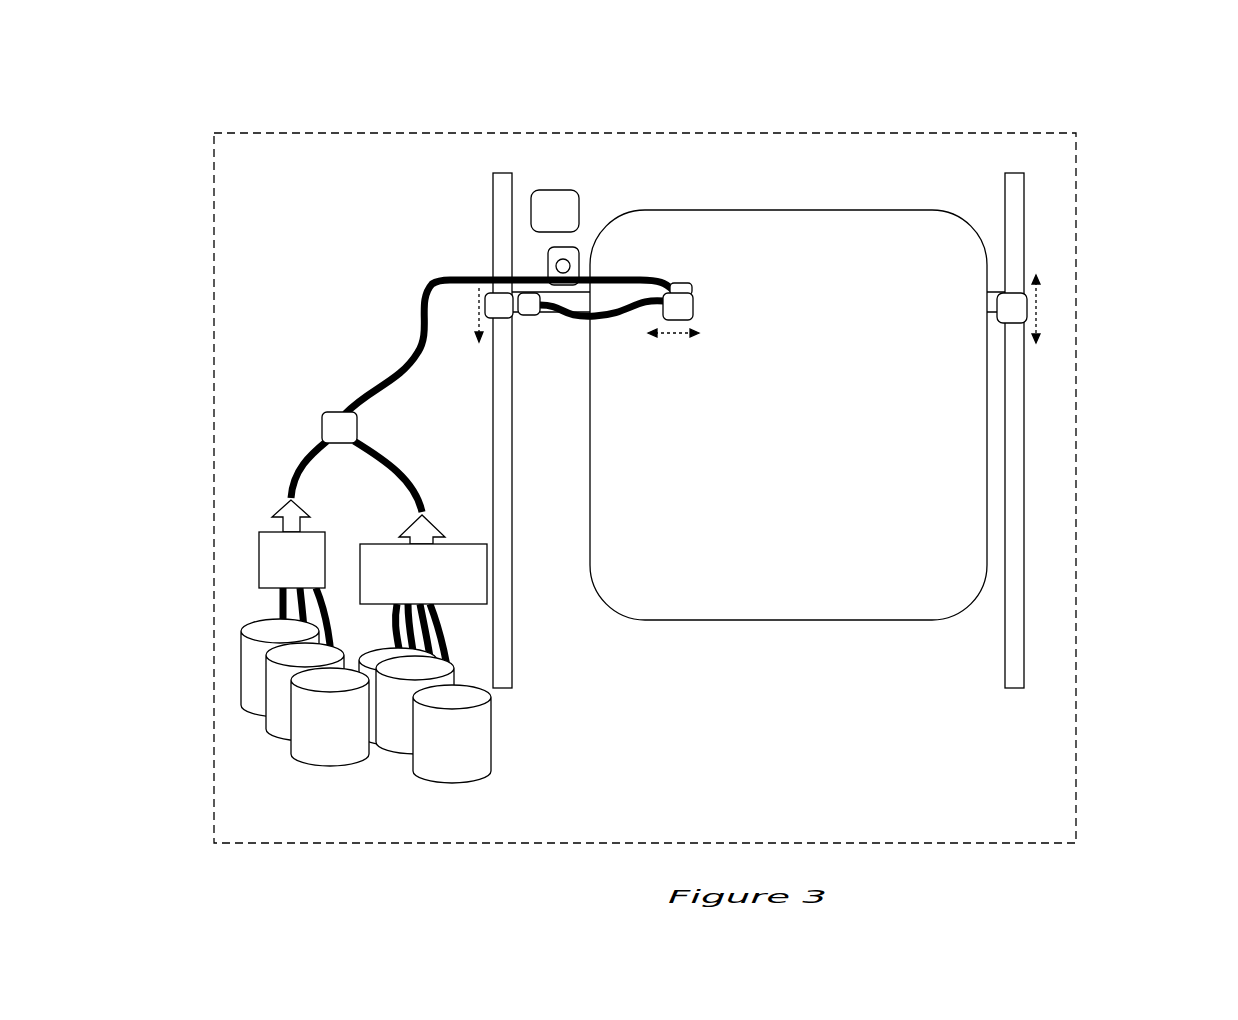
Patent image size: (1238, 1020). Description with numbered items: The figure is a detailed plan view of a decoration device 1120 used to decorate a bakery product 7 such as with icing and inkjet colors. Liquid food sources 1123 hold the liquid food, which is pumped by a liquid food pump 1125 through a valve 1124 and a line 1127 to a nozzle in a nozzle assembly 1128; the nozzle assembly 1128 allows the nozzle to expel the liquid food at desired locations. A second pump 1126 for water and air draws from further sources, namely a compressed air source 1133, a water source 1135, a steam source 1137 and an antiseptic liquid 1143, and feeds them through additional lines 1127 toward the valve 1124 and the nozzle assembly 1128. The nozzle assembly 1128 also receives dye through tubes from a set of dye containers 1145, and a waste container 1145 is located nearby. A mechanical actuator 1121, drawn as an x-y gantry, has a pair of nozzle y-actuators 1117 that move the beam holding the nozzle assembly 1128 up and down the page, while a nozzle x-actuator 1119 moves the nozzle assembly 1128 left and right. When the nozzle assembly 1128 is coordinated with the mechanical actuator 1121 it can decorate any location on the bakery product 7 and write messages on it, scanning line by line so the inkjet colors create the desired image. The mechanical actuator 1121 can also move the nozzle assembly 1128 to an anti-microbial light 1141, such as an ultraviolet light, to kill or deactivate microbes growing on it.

The decoration device 1120 is at (781, 86).
The mechanical actuator 1121 is at (1003, 656).
The bakery product 7 is at (720, 534).
The waste container / dye containers 1145 is at (573, 192).
The anti-microbial light 1141 is at (548, 263).
The line 1127 is at (422, 332).
The valve 1124 is at (322, 428).
The dye containers 1125 is at (205, 540).
The pump water/air 1126 is at (421, 579).
The liquid food sources 1123 is at (292, 680).
The compressed air source 1133 is at (470, 741).
The water source 1135 is at (470, 771).
The steam source 1137 is at (469, 801).
The antiseptic liquid 1143 is at (480, 739).
The nozzle assembly 1128 is at (690, 283).
The nozzle x-actuator 1119 is at (688, 314).
The nozzle y-actuator 1117 is at (1030, 306).